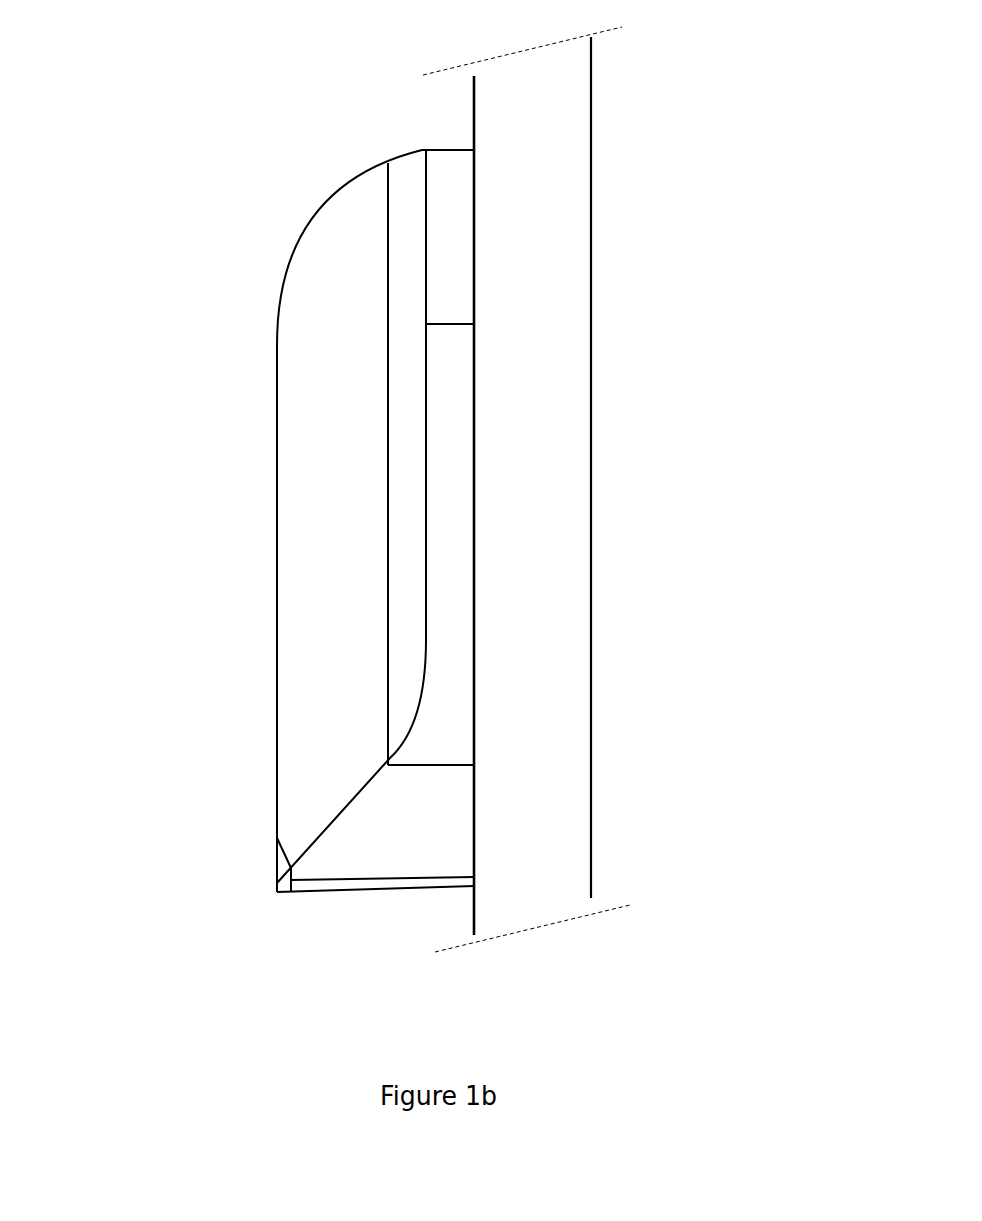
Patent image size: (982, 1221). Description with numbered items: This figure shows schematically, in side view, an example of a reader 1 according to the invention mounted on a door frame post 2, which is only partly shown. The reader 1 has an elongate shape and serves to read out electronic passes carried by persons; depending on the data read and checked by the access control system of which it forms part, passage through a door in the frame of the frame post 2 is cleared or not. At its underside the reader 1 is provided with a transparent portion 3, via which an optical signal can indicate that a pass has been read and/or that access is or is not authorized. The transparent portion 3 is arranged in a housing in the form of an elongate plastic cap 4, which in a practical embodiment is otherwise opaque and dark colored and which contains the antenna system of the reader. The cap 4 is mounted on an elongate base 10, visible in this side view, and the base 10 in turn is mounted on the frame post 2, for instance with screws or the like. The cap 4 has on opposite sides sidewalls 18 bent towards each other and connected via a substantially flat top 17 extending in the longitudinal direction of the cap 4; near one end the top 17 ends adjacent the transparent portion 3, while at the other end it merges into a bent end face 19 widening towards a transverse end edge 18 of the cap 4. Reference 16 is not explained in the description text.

The reader 1 is at (278, 521).
The door frame post 2 is at (540, 98).
The transparent portion 3 is at (278, 850).
The cap 4 is at (251, 247).
The base 10 is at (598, 544).
The inner body 16 is at (249, 516).
The top 17 is at (175, 618).
The sidewalls 18 is at (273, 104).
The bent end face 19 is at (230, 441).